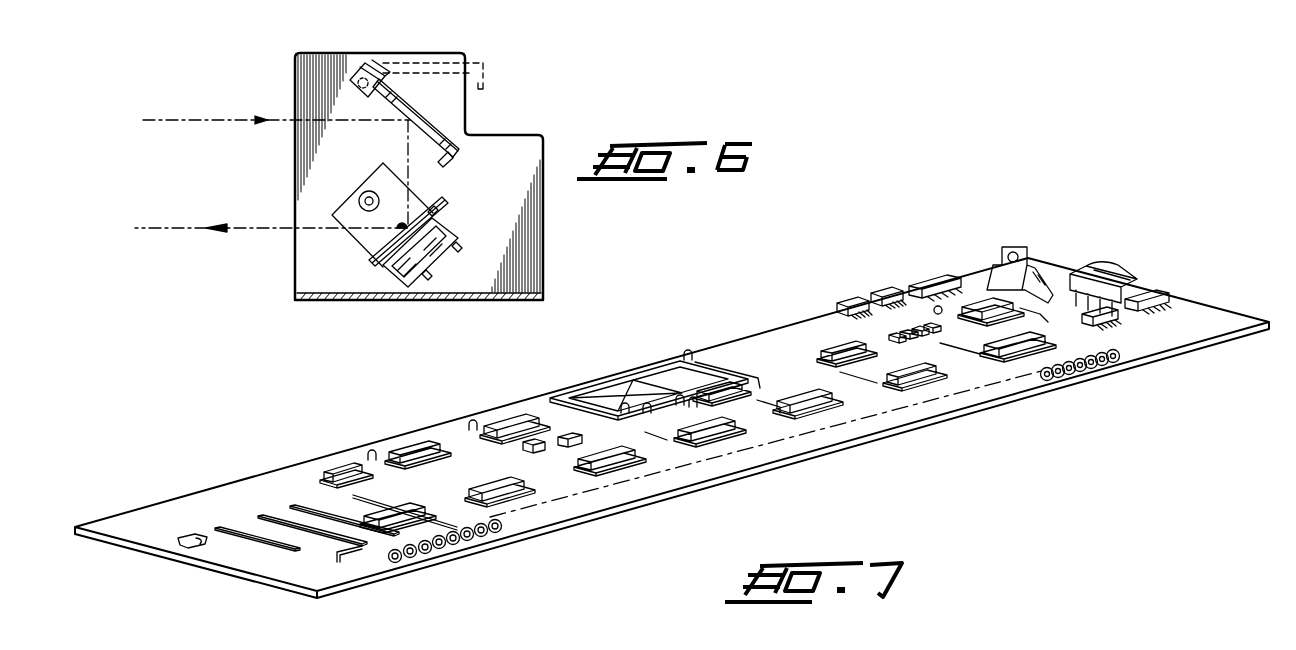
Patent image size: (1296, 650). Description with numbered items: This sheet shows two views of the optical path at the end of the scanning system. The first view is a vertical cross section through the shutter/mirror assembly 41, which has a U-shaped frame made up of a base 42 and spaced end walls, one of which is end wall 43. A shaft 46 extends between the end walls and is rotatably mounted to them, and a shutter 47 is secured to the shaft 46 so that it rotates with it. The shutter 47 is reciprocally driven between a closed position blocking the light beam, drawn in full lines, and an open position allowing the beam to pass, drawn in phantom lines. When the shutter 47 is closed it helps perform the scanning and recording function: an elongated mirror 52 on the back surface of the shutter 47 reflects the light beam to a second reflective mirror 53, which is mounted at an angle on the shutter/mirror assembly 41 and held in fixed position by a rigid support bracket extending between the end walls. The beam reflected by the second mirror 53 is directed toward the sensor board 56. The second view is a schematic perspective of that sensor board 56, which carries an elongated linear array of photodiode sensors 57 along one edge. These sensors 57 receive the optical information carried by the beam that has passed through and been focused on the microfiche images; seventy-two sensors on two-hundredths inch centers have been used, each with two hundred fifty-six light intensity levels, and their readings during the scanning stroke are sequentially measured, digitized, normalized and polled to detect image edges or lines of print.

In FIG. 6, the shutter/mirror assembly 41 is at (492, 50).
In FIG. 6, the base 42 is at (431, 299).
In FIG. 6, the end wall 43 is at (522, 258).
In FIG. 6, the shaft 46 is at (350, 82).
In FIG. 6, the shutter 47 is at (448, 147).
In FIG. 6, the elongated mirror 52 is at (426, 156).
In FIG. 6, the second reflective mirror 53 is at (387, 247).
In FIG. 7, the sensor board 56 is at (418, 423).
In FIG. 7, the photodiode sensors 57 is at (458, 545).